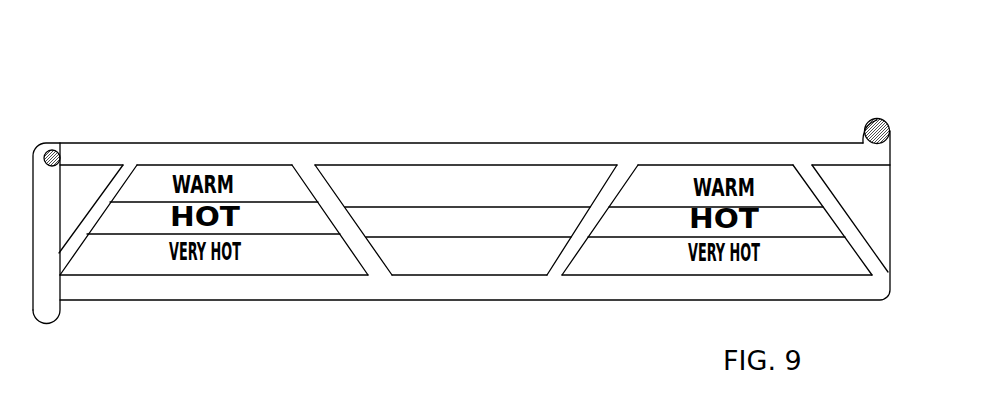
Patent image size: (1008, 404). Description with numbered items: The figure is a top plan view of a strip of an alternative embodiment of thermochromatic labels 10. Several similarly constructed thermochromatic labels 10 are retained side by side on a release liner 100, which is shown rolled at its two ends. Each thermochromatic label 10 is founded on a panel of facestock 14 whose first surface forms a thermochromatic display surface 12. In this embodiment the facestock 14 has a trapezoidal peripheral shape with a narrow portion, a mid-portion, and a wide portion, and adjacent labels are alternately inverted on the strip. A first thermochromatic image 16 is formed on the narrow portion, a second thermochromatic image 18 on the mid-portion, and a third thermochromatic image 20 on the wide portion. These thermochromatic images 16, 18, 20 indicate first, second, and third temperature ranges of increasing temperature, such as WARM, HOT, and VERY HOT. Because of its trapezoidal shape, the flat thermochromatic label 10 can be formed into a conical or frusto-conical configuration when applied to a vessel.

The release liner 100 is at (472, 145).
The thermochromatic label 10 is at (427, 150).
The thermochromatic display surface 12 is at (430, 275).
The facestock 14 is at (542, 167).
The first thermochromatic image 16 is at (475, 237).
The second thermochromatic image 18 is at (510, 227).
The third thermochromatic image 20 is at (457, 178).